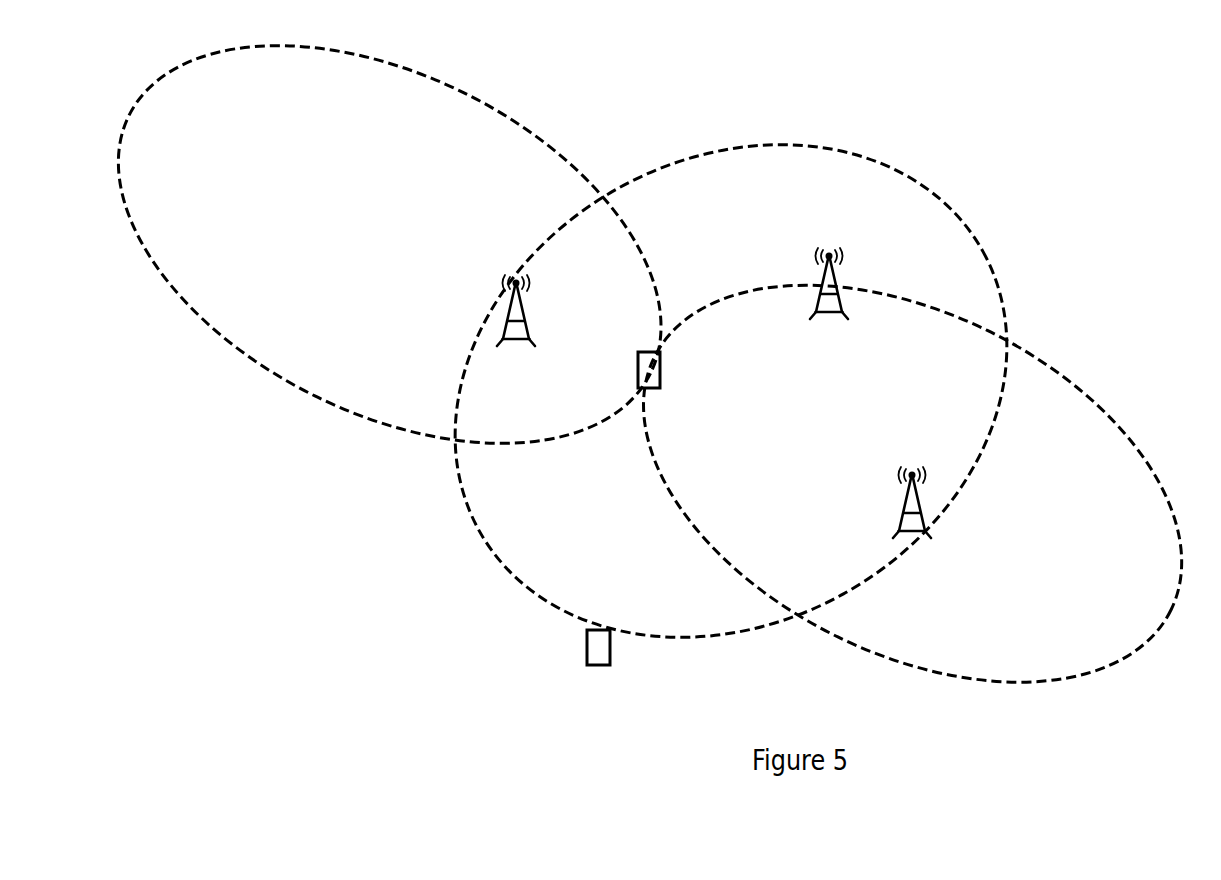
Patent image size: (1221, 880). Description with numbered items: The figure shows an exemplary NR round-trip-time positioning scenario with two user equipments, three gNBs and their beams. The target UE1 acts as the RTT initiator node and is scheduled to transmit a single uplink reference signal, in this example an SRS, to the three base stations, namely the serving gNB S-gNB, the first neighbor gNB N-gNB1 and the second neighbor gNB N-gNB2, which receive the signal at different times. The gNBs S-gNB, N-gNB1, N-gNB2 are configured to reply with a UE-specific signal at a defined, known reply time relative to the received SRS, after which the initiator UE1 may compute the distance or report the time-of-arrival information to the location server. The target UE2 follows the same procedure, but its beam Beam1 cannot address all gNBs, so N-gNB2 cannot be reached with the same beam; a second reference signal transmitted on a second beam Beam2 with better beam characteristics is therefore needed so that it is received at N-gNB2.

The second beam Beam2 is at (389, 262).
The first beam Beam1 is at (794, 405).
The second neighbor gNB N-gNB2 is at (513, 327).
The first neighbor gNB N-gNB1 is at (826, 308).
The serving gNB S-gNB is at (918, 525).
The target UE1 is at (612, 667).
The target UE2 is at (676, 388).